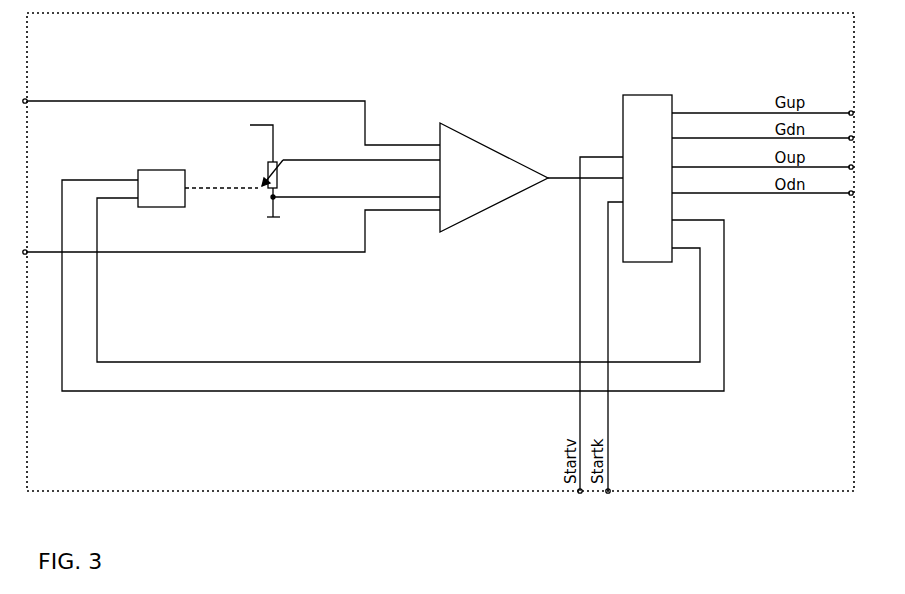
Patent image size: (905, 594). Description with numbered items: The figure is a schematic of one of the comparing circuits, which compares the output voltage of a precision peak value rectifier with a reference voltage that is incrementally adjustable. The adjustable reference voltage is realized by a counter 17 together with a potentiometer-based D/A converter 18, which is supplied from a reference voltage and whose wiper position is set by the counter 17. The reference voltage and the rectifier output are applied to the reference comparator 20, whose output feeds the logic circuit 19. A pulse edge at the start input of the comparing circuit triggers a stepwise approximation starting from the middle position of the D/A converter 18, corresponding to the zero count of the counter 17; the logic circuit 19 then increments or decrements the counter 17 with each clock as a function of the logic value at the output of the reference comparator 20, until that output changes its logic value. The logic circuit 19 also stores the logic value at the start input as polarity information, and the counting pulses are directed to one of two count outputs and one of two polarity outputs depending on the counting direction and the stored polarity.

The counter 17 is at (160, 169).
The potentiometer-based D/A converter 18 is at (265, 196).
The logic circuit 19 is at (645, 105).
The reference comparator 20 is at (487, 160).